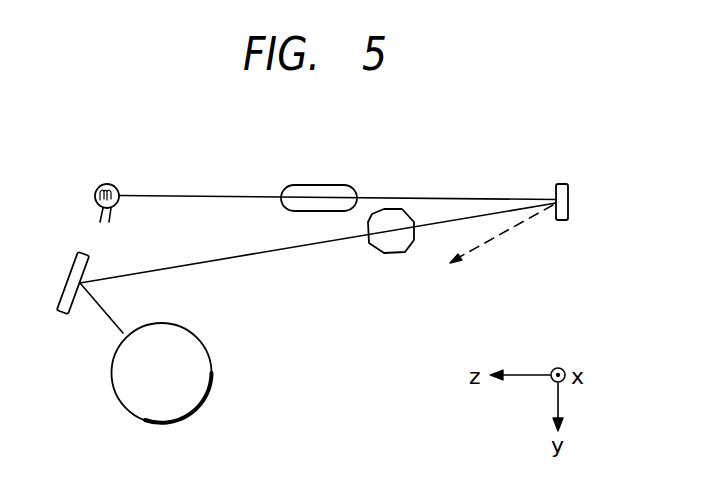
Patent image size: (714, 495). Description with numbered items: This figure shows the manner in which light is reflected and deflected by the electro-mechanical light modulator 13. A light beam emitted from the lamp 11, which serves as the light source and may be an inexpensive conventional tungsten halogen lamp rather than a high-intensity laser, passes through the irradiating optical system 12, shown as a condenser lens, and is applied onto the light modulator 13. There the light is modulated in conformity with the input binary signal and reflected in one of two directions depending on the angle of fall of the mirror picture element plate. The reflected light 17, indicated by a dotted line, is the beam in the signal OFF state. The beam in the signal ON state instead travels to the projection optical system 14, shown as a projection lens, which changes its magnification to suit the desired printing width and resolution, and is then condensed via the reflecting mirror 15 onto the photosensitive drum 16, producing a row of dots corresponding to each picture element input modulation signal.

The lamp 11 is at (108, 183).
The irradiating optical system 12 is at (322, 185).
The electro-mechanical light modulator 13 is at (562, 183).
The projection optical system 14 is at (395, 254).
The reflecting mirror 15 is at (70, 262).
The photosensitive drum 16 is at (200, 367).
The reflected light 17 is at (500, 234).